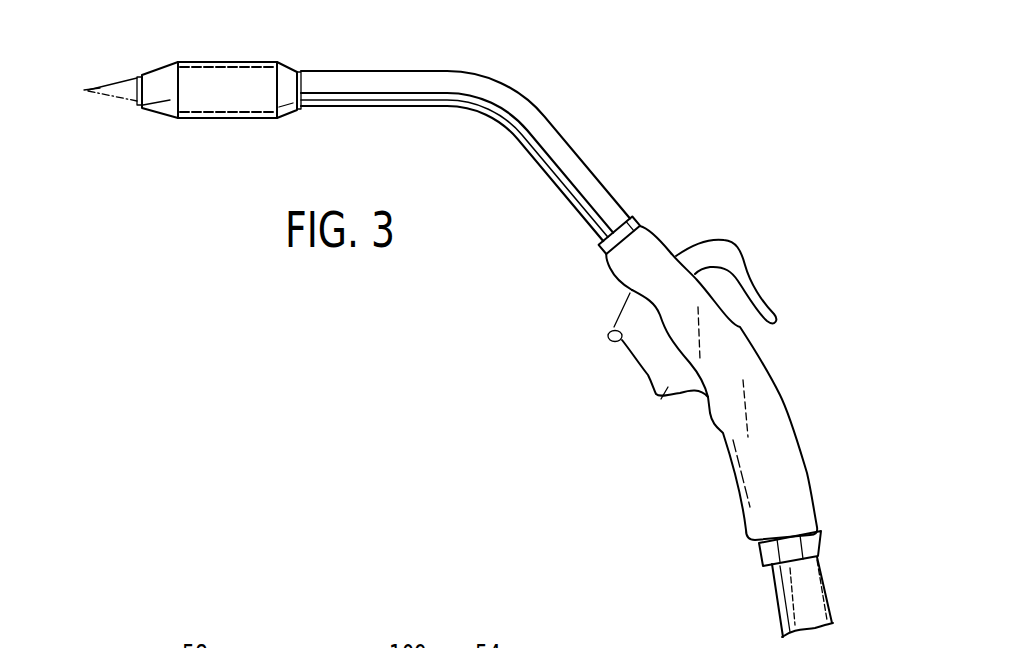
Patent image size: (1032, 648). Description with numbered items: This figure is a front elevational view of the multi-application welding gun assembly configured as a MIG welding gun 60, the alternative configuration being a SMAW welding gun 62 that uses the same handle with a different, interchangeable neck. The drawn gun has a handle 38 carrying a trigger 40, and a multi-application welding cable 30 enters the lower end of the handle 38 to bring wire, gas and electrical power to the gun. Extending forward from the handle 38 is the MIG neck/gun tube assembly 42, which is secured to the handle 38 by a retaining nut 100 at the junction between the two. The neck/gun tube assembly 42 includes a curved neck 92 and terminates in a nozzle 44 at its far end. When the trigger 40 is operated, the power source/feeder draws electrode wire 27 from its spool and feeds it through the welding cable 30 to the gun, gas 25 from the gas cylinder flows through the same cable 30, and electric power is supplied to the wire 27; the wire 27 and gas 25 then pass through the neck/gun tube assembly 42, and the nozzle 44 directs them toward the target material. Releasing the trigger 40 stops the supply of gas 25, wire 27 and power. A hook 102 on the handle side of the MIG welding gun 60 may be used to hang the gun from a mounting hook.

The gas 25 is at (109, 86).
The electrode wire 27 is at (87, 89).
The multi-application welding cable 30 is at (808, 578).
The handle 38 is at (785, 420).
The trigger 40 is at (665, 397).
The MIG neck/gun tube assembly 42 is at (475, 142).
The nozzle 44 is at (223, 60).
The MIG welding gun 60 is at (739, 93).
The SMAW welding gun 62 is at (465, 624).
The neck 92 is at (510, 102).
The retaining nut 100 is at (605, 249).
The hook 102 is at (727, 241).